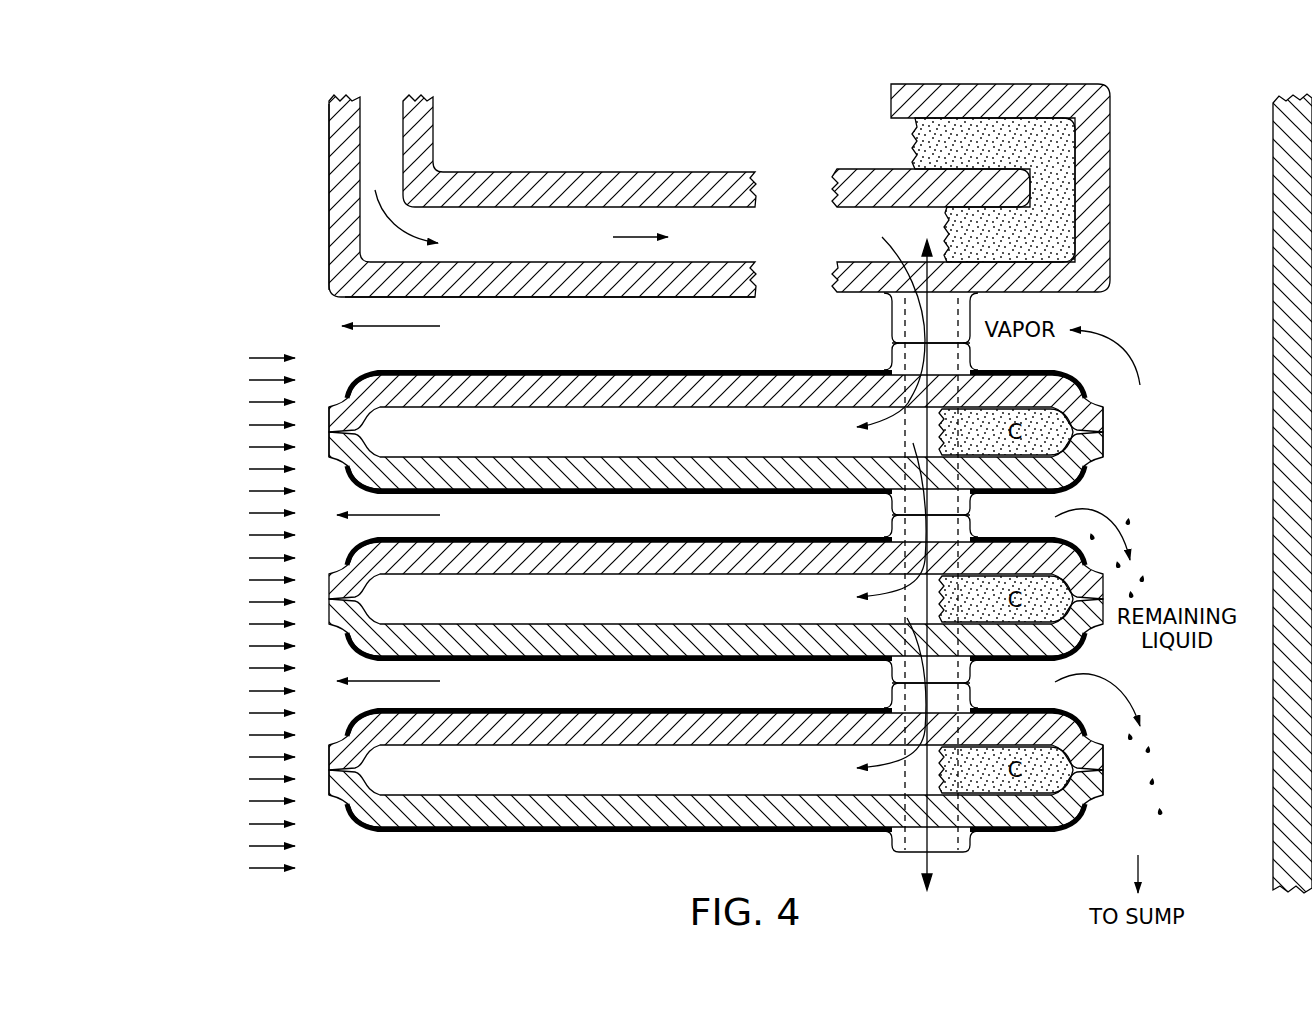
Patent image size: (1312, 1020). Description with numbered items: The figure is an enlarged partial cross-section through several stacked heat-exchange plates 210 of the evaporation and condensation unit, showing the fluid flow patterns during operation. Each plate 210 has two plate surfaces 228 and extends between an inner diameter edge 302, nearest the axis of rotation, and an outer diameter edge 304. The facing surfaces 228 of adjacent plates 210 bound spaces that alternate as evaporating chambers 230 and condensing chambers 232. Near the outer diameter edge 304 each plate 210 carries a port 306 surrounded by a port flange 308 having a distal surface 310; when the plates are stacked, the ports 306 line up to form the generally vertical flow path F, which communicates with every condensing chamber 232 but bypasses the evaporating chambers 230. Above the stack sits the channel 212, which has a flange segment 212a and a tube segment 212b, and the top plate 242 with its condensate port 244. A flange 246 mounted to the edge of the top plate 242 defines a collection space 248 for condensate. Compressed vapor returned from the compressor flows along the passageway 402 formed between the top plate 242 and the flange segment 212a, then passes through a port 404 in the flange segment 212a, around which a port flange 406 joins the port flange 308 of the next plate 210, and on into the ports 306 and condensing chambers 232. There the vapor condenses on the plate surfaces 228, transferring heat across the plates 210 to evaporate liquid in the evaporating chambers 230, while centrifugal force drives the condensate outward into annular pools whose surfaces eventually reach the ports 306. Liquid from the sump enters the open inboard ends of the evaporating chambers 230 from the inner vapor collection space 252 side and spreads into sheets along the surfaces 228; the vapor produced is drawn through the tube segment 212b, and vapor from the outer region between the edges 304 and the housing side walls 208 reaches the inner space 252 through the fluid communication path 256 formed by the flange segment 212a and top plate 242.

The side walls 208 is at (1272, 285).
The heat-exchange plates 210 is at (721, 602).
The channel 212 is at (327, 121).
The flange segment 212a is at (645, 298).
The tube segment 212b is at (327, 243).
The plate surfaces 228 is at (425, 371).
The evaporating chambers 230 is at (501, 601).
The condensing chambers 232 is at (776, 516).
The top plate 242 is at (455, 172).
The condensate port 244 is at (1050, 188).
The flange 246 is at (1057, 82).
The collection space 248 is at (1040, 137).
The inner vapor collection space 252 is at (179, 586).
The first fluid communication path 256 is at (571, 339).
The inner diameter edge 302 is at (329, 418).
The outer diameter edge 304 is at (1108, 782).
The ports 306 is at (952, 610).
The port flange 308 is at (933, 601).
The distal surface 310 is at (948, 855).
The passageway 402 is at (700, 248).
The port 404 is at (958, 313).
The port flange 406 is at (891, 314).